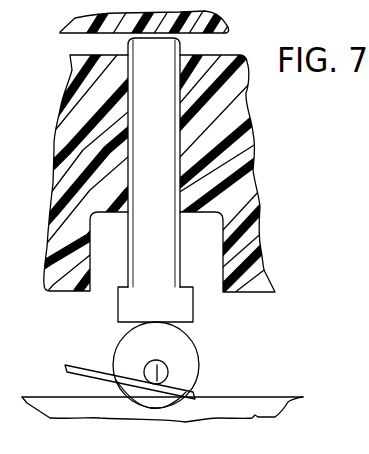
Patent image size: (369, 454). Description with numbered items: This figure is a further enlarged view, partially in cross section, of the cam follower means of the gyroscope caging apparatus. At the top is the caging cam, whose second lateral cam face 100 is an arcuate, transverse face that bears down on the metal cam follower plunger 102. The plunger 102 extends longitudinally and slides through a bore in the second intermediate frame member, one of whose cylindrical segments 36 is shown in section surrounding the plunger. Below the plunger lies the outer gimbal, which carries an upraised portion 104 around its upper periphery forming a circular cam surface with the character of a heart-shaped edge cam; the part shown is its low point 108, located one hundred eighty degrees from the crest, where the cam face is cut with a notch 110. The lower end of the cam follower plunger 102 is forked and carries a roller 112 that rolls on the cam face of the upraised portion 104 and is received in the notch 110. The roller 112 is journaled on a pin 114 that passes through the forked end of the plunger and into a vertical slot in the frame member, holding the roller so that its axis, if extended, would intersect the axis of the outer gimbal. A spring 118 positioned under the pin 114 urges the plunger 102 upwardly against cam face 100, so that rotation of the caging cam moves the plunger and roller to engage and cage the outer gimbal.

The cylindrical segment 36 is at (250, 153).
The second lateral cam face 100 is at (226, 36).
The cam follower plunger 102 is at (143, 128).
The upraised portion 104 is at (258, 404).
The low point 108 is at (207, 398).
The notch 110 is at (192, 391).
The roller 112 is at (120, 391).
The pin 114 is at (156, 361).
The spring 118 is at (100, 372).